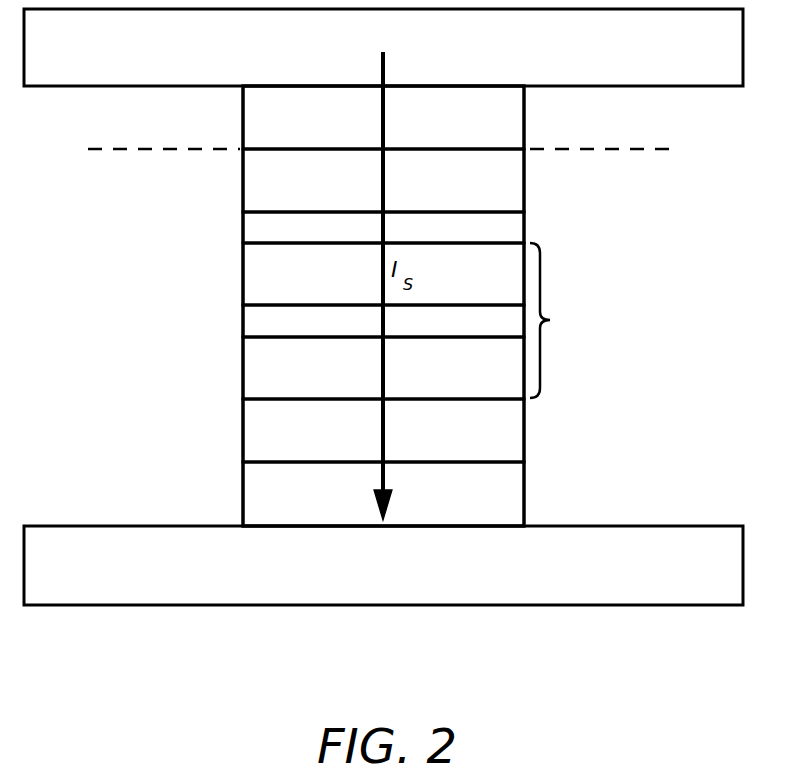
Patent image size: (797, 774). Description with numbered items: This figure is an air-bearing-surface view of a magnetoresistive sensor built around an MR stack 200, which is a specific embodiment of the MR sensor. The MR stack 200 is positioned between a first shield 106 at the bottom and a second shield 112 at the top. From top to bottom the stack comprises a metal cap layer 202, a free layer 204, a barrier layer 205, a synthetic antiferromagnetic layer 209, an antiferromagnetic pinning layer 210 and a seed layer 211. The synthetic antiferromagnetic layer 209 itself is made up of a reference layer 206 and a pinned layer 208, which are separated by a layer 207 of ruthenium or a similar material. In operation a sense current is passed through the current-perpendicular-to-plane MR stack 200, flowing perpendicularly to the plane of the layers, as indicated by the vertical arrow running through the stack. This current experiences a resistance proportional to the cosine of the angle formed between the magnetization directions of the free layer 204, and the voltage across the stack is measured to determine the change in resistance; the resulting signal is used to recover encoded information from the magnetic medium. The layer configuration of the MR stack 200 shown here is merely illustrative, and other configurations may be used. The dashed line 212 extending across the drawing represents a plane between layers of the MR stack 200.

The second shield 112 is at (330, 59).
The first shield 106 is at (322, 573).
The MR stack 200 is at (600, 237).
The metal cap layer 202 is at (330, 128).
The free layer 204 is at (330, 188).
The barrier layer 205 is at (330, 236).
The reference layer 206 is at (330, 283).
The ruthenium layer 207 is at (330, 331).
The pinned layer 208 is at (330, 380).
The synthetic antiferromagnetic layer 209 is at (556, 354).
The antiferromagnetic pinning layer 210 is at (330, 441).
The seed layer 211 is at (322, 508).
The dashed line 212 is at (137, 152).